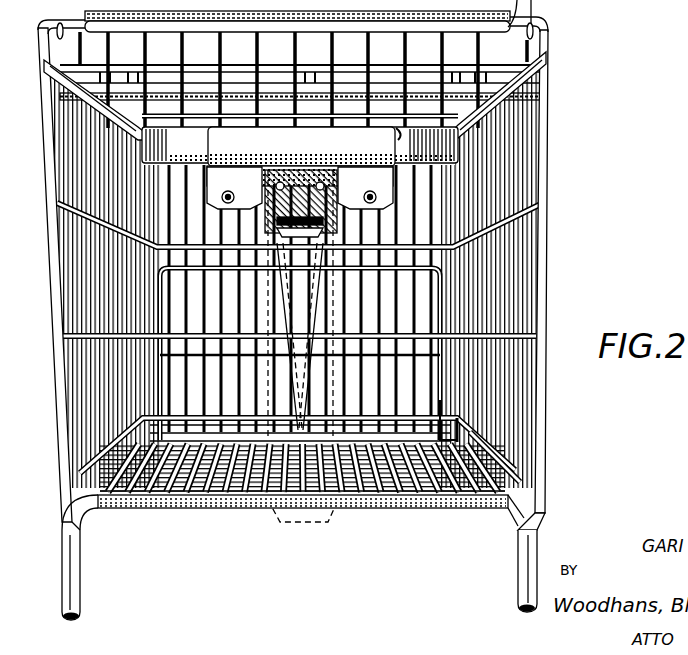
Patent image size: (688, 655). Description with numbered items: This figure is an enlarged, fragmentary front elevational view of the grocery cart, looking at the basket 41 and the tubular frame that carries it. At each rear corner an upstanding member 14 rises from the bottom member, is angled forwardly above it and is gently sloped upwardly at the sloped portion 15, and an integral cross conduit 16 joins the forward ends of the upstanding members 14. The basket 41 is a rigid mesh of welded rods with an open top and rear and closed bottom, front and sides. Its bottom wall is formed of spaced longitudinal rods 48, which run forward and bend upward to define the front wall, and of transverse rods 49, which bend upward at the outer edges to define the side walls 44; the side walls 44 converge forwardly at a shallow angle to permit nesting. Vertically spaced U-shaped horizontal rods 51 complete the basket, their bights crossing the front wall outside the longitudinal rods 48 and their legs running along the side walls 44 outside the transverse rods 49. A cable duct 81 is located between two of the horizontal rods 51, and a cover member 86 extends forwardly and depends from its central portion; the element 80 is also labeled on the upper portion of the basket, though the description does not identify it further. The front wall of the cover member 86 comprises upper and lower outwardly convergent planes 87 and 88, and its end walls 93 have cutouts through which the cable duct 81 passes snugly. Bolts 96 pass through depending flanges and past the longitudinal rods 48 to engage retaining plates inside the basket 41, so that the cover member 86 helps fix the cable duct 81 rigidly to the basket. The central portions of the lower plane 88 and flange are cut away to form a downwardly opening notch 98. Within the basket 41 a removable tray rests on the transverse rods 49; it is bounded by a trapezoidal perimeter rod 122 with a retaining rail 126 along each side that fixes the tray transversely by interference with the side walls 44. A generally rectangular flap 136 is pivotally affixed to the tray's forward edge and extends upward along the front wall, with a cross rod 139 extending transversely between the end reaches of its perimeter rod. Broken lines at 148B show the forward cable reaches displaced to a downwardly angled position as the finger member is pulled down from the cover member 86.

The upstanding member 14 is at (80, 597).
The sloped portion 15 is at (95, 507).
The cross conduit 16 is at (440, 500).
The basket 41 is at (562, 153).
The side wall 44 is at (330, 303).
The longitudinal rod 48 is at (480, 440).
The transverse rod 49 is at (459, 424).
The horizontal rod 51 is at (458, 258).
The handle side bar 80 is at (540, 110).
The cable duct 81 is at (138, 142).
The cover member 86 is at (400, 133).
The upper convergent plane 87 is at (301, 182).
The lower convergent plane 88 is at (374, 180).
The end wall 93 is at (205, 148).
The bolt 96 is at (231, 194).
The notch 98 is at (283, 184).
The perimeter rod 122 is at (143, 420).
The retaining rail 126 is at (437, 413).
The flap 136 is at (450, 306).
The cross rod 139 is at (405, 355).
The downwardly angled position of forward cable reaches 148B is at (318, 290).